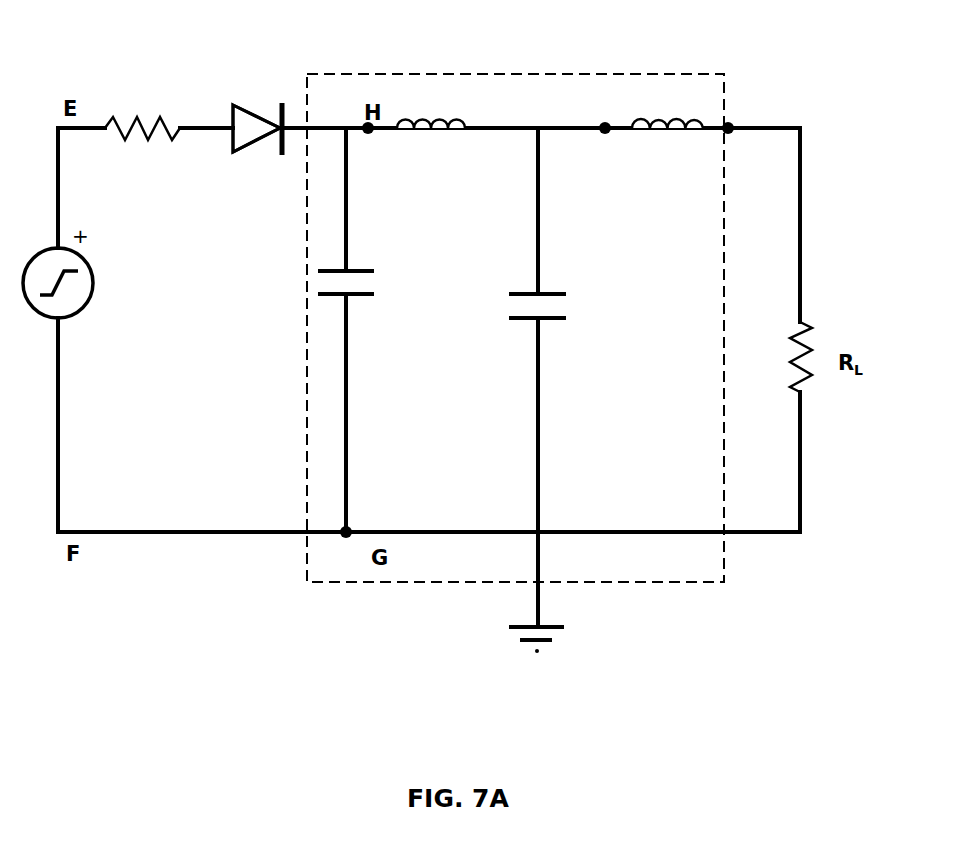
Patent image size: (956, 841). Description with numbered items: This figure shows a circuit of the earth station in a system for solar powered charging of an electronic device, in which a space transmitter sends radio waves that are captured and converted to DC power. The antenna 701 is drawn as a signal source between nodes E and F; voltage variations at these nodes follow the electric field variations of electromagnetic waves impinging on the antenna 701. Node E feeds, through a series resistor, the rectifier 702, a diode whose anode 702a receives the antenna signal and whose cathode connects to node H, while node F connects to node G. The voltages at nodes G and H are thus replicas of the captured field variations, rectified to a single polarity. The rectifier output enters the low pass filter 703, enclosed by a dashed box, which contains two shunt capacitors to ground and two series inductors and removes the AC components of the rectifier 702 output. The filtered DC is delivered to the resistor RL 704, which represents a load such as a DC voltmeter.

The antenna 701 is at (93, 290).
The rectifier 702 is at (242, 108).
The anode of the diode 702a is at (233, 140).
The low pass filter 703 is at (613, 74).
The resistor RL 704 is at (808, 328).